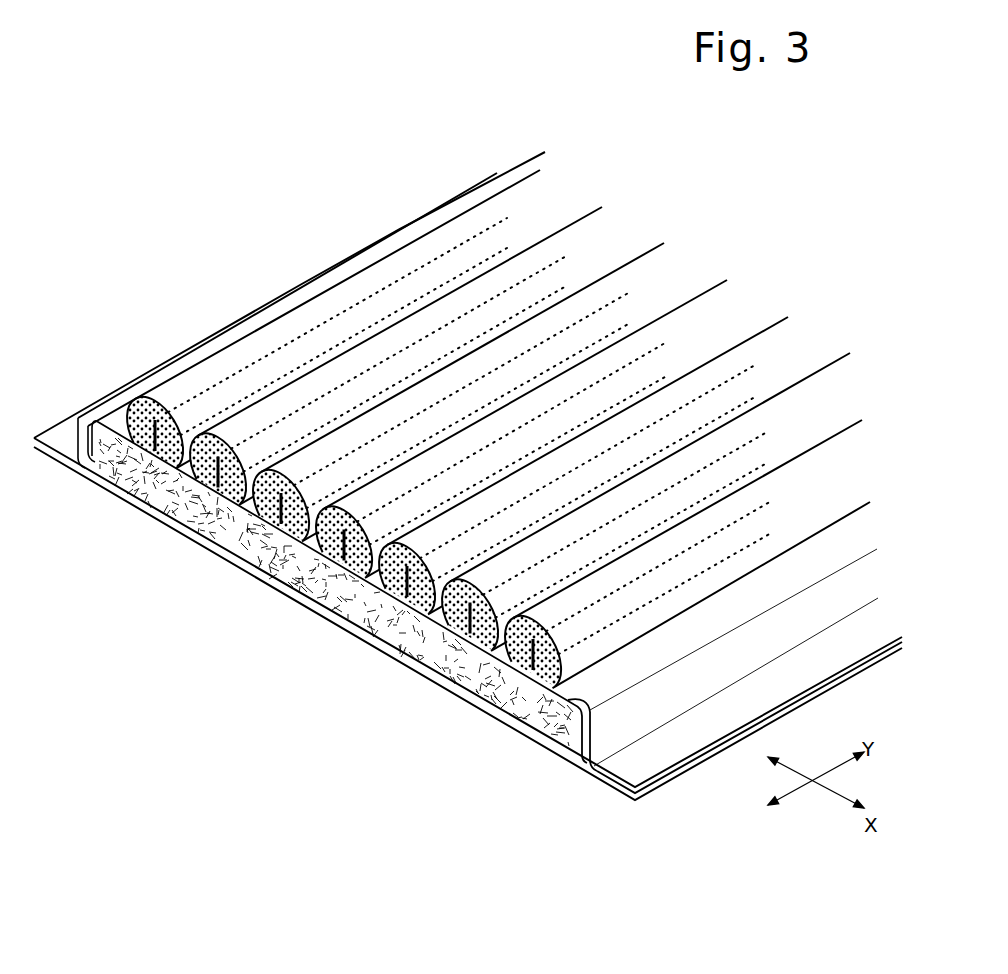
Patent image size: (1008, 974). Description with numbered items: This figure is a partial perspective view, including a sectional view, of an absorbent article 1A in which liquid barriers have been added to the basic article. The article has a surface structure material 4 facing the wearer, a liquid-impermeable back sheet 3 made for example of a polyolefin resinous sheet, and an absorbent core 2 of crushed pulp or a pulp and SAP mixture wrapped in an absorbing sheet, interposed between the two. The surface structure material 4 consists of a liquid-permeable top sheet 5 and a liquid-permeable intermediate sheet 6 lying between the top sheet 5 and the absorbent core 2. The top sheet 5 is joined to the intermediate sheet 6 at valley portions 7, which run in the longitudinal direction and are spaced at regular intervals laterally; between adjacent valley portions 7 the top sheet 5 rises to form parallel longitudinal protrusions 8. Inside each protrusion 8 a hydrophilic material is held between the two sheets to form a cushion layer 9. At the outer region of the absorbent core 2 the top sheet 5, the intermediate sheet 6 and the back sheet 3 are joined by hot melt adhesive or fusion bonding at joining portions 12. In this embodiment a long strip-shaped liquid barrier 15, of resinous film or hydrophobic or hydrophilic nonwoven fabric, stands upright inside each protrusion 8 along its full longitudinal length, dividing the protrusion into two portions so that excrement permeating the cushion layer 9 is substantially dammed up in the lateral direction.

The absorbent article 1A is at (232, 625).
The absorbent core 2 is at (452, 682).
The back sheet 3 is at (535, 745).
The surface structure material 4 is at (385, 278).
The top sheet 5 is at (598, 722).
The intermediate sheet 6 is at (614, 790).
The valley portions 7 is at (324, 592).
The protrusions 8 is at (487, 505).
The cushion layer 9 is at (240, 462).
The joining portions 12 is at (650, 765).
The liquid barriers 15 is at (338, 500).